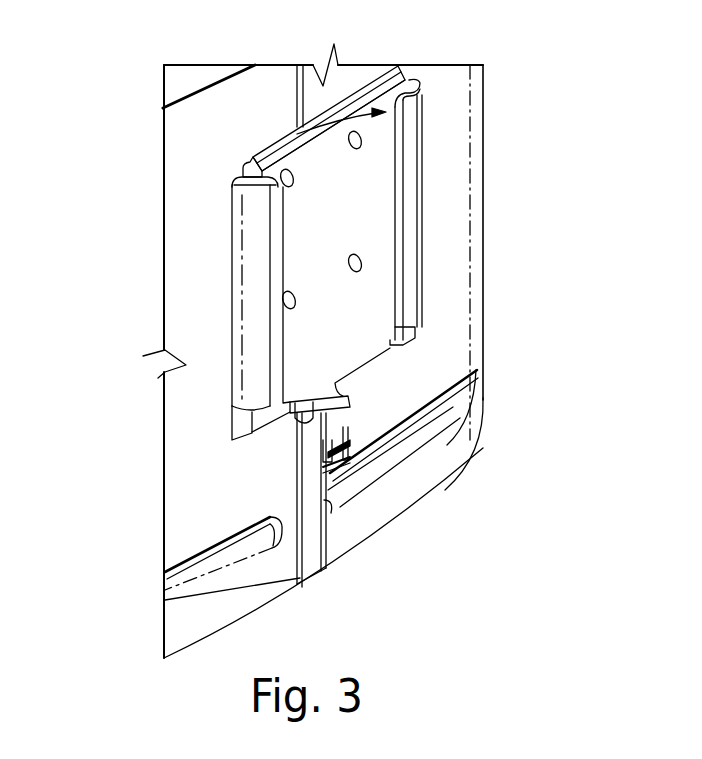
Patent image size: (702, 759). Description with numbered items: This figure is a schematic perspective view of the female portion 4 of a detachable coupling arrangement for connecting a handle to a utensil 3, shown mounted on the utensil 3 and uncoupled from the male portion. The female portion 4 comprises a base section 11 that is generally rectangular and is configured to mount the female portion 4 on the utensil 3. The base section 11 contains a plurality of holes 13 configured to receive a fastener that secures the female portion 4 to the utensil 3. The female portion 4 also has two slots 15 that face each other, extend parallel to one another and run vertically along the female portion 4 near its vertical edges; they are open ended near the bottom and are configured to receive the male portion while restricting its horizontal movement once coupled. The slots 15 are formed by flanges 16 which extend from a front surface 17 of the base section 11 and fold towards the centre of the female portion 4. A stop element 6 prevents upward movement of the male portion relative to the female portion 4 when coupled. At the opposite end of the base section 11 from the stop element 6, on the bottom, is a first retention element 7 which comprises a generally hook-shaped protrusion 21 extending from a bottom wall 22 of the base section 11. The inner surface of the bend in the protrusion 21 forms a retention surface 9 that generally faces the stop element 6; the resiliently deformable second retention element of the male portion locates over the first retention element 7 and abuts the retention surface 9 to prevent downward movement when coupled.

The utensil 3 is at (297, 120).
The slot 15 is at (297, 135).
The stop element 6 is at (400, 70).
The female portion 4 is at (378, 175).
The base section 11 is at (378, 223).
The holes 13 is at (361, 263).
The front surface 17 is at (375, 307).
The flanges 16 is at (233, 323).
The protrusion 21 is at (250, 432).
The bottom wall 22 is at (390, 348).
The retention surface 9 is at (335, 385).
The first retention element 7 is at (327, 460).